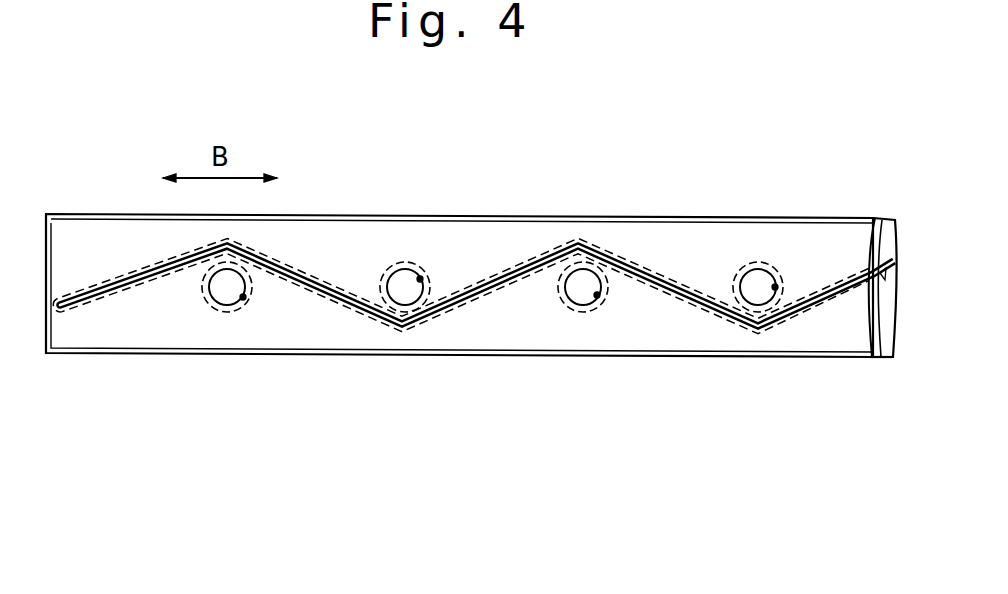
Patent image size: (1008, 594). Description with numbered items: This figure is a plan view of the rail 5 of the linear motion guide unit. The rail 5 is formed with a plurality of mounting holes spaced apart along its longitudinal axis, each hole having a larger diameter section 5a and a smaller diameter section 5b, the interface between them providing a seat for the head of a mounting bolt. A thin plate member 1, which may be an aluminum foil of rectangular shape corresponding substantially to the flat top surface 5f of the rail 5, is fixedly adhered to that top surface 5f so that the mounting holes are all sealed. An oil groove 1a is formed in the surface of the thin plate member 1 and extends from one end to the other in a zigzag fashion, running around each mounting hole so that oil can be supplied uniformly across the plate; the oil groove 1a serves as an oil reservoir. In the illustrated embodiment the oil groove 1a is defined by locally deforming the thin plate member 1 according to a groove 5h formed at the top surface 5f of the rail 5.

The thin plate member 1 is at (475, 257).
The oil groove 1a is at (638, 272).
The rail 5 is at (833, 205).
The larger diameter section 5a is at (420, 278).
The smaller diameter section 5b is at (398, 263).
The flat top surface 5f is at (887, 237).
The groove 5h is at (876, 357).